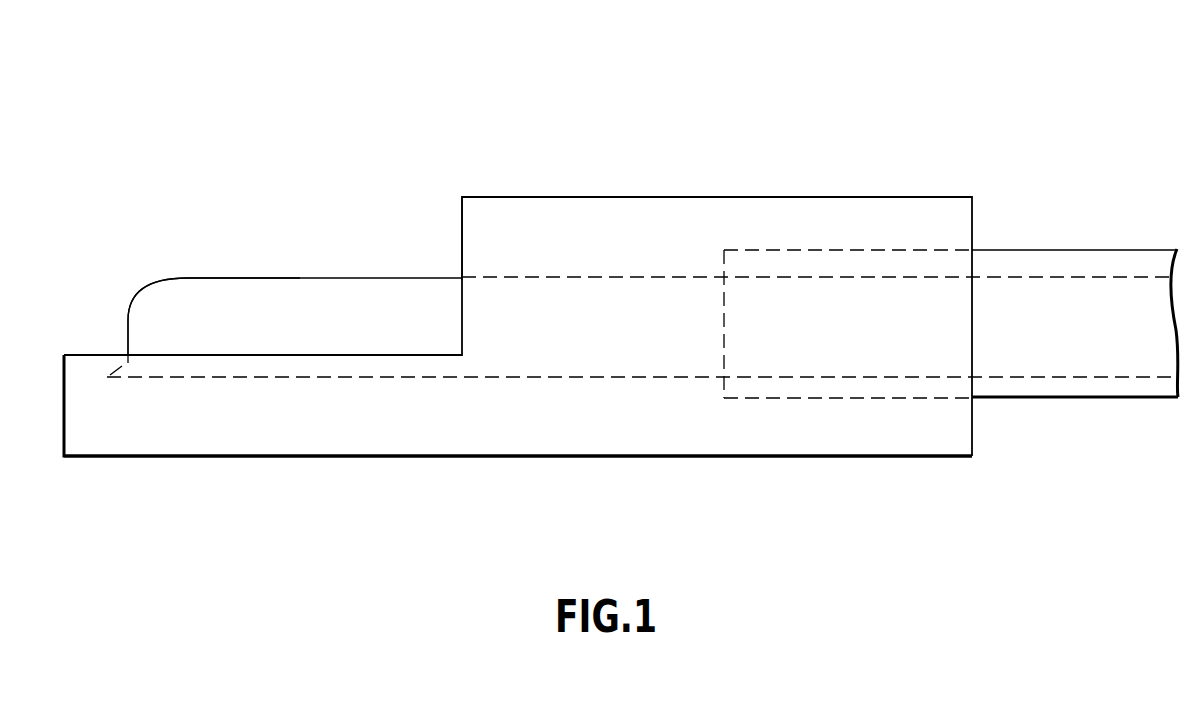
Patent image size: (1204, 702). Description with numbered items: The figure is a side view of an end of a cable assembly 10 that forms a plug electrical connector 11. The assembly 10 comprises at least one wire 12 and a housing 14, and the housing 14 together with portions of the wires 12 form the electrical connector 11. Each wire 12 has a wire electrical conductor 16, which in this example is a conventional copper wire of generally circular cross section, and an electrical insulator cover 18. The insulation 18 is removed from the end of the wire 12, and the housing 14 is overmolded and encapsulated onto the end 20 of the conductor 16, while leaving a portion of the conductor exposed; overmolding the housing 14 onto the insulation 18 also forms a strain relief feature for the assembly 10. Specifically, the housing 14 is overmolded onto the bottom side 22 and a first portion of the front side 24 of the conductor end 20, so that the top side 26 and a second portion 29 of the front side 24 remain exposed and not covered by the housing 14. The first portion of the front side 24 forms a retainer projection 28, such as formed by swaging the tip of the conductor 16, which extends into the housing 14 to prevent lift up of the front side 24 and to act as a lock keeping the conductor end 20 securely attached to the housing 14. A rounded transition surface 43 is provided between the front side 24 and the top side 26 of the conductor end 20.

The assembly 10 is at (750, 95).
The electrical connector 11 is at (483, 196).
The wire 12 is at (1021, 247).
The housing 14 is at (553, 196).
The wire electrical conductor 16 is at (1067, 308).
The electrical insulator cover 18 is at (1073, 398).
The conductor end 20 is at (328, 277).
The bottom side 22 is at (340, 379).
The front side 24 is at (126, 345).
The top side 26 is at (238, 277).
The retainer projection 28 is at (102, 386).
The second portion of the front side 29 is at (126, 352).
The rounded transition surface 43 is at (148, 287).